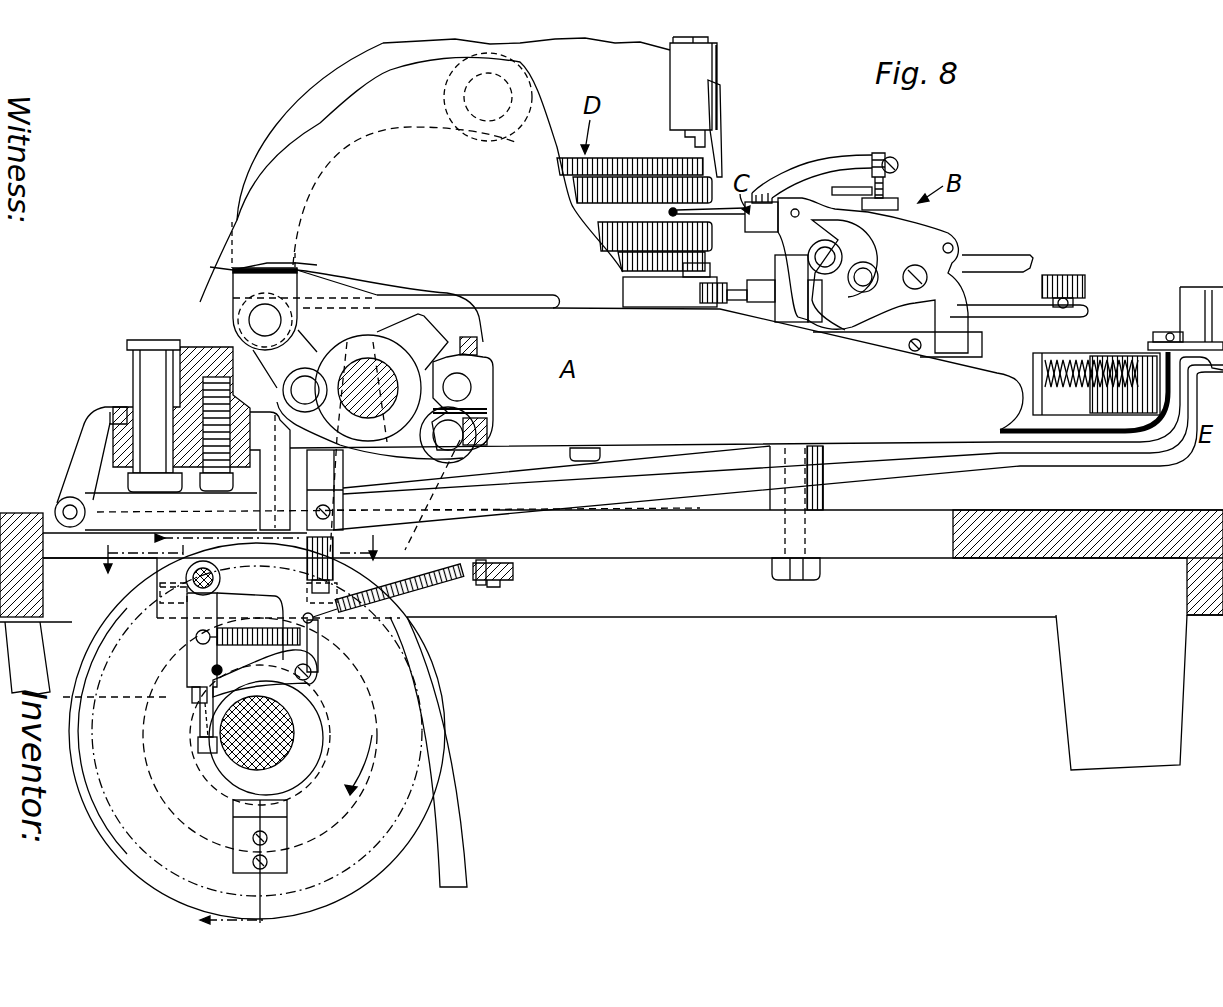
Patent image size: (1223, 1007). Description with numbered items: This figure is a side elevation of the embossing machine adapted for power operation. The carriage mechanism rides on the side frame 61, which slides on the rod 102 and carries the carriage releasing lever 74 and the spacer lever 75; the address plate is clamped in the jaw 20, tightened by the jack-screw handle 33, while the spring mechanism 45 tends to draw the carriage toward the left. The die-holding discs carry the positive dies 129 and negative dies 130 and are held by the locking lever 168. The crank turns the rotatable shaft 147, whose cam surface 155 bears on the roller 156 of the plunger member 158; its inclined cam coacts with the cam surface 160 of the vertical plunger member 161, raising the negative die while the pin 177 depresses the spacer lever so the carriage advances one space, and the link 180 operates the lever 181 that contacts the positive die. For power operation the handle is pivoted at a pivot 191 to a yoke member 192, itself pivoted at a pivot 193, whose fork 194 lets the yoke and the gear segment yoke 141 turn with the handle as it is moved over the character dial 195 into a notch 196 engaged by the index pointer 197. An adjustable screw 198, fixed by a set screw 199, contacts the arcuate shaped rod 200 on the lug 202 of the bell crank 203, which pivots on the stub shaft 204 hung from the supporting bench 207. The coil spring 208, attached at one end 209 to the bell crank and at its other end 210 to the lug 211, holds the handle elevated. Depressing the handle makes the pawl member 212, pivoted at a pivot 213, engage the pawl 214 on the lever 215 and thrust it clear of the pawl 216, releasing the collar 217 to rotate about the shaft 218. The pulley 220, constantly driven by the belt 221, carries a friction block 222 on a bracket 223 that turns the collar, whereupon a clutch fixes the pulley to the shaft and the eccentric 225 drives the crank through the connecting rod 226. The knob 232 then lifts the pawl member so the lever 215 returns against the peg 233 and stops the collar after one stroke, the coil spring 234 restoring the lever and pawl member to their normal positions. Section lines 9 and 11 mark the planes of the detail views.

The lever 181 is at (326, 88).
The positive dies 129 is at (668, 170).
The negative dies 130 is at (645, 260).
The gear segment yoke 141 is at (212, 338).
The rotatable shaft 147 is at (368, 360).
The cam surface 155 is at (381, 377).
The roller 156 is at (478, 346).
The plunger member 158 is at (493, 403).
The cam surface 160 is at (268, 332).
The vertical plunger member 161 is at (712, 268).
The locking lever 168 is at (668, 282).
The pin 177 is at (735, 300).
The link 180 is at (358, 394).
The pivot 191 is at (60, 505).
The yoke member 192 is at (96, 413).
The pivot 193 is at (98, 425).
The fork 194 is at (275, 494).
The character dial 195 is at (1105, 354).
The notch 196 is at (1080, 357).
The index pointer 197 is at (1153, 340).
The adjustable screw 198 is at (330, 478).
The set screw 199 is at (345, 501).
The arcuate shaped rod 200 is at (339, 558).
The lug 202 is at (340, 572).
The bell crank 203 is at (231, 578).
The stub shaft 204 is at (187, 577).
The supporting bench 207 is at (584, 548).
The coil spring 208 is at (413, 590).
The end 209 is at (316, 621).
The end 210 is at (480, 585).
The lug 211 is at (515, 572).
The pawl member 212 is at (283, 693).
The pivot 213 is at (312, 673).
The pawl 214 is at (208, 697).
The lever 215 is at (194, 672).
The pawl 216 is at (205, 757).
The collar 217 is at (225, 778).
The shaft 218 is at (288, 728).
The pulley 220 is at (390, 750).
The belt 221 is at (462, 832).
The block of frictional material 222 is at (280, 811).
The bracket 223 is at (283, 850).
The eccentric 225 is at (335, 743).
The connecting rod 226 is at (410, 533).
The knob 232 is at (240, 710).
The peg 233 is at (207, 672).
The coil spring 234 is at (228, 630).
The jaw 20 is at (782, 173).
The handle 33 is at (842, 186).
The spring mechanism 45 is at (768, 262).
The carriage releasing lever 74 is at (987, 254).
The spacer lever 75 is at (1024, 307).
The rod 102 is at (982, 346).
The side frame 61 is at (873, 275).
The section line 9 is at (220, 729).
The section line 11 is at (243, 563).